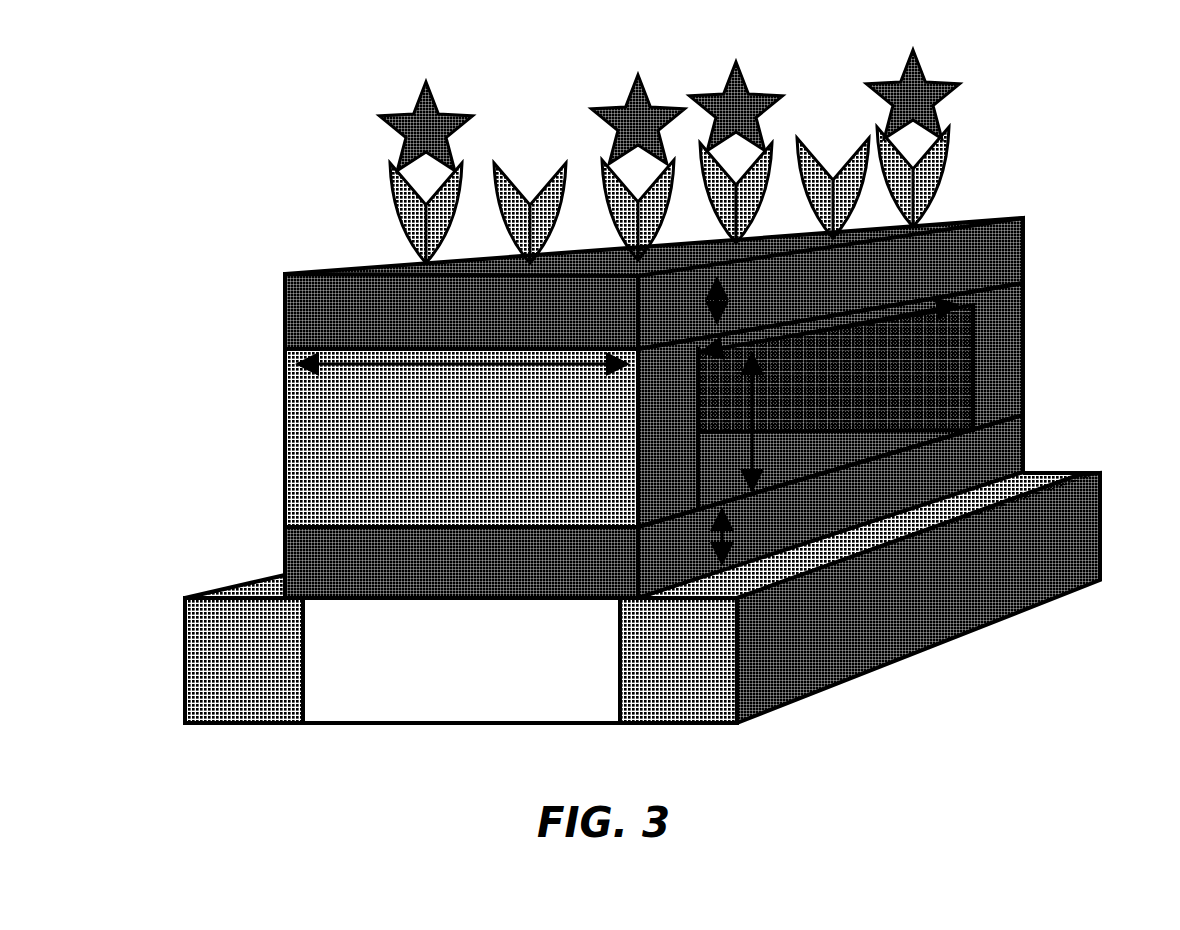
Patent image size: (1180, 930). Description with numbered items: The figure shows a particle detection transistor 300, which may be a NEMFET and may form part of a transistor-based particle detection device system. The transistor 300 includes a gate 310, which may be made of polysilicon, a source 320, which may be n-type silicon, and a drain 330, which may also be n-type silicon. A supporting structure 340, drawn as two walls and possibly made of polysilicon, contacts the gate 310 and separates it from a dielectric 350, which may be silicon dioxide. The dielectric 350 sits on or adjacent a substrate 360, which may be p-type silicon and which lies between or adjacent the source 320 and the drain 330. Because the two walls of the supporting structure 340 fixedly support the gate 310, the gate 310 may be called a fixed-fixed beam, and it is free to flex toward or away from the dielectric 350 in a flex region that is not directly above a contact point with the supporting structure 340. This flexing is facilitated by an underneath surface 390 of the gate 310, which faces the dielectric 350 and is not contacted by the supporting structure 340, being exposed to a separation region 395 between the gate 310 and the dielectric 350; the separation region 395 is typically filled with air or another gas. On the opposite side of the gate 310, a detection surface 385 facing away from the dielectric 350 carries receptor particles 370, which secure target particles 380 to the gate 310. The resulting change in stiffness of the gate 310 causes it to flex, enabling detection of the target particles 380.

The particle detection transistor 300 is at (690, 15).
The gate 310 is at (330, 320).
The source 320 is at (200, 642).
The drain 330 is at (690, 697).
The supporting structure 340 is at (300, 402).
The dielectric 350 is at (310, 550).
The substrate 360 is at (368, 704).
The receptor particles 370 is at (392, 203).
The target particles 380 is at (946, 80).
The detection surface 385 is at (592, 253).
The underneath surface 390 is at (822, 350).
The separation region 395 is at (950, 351).